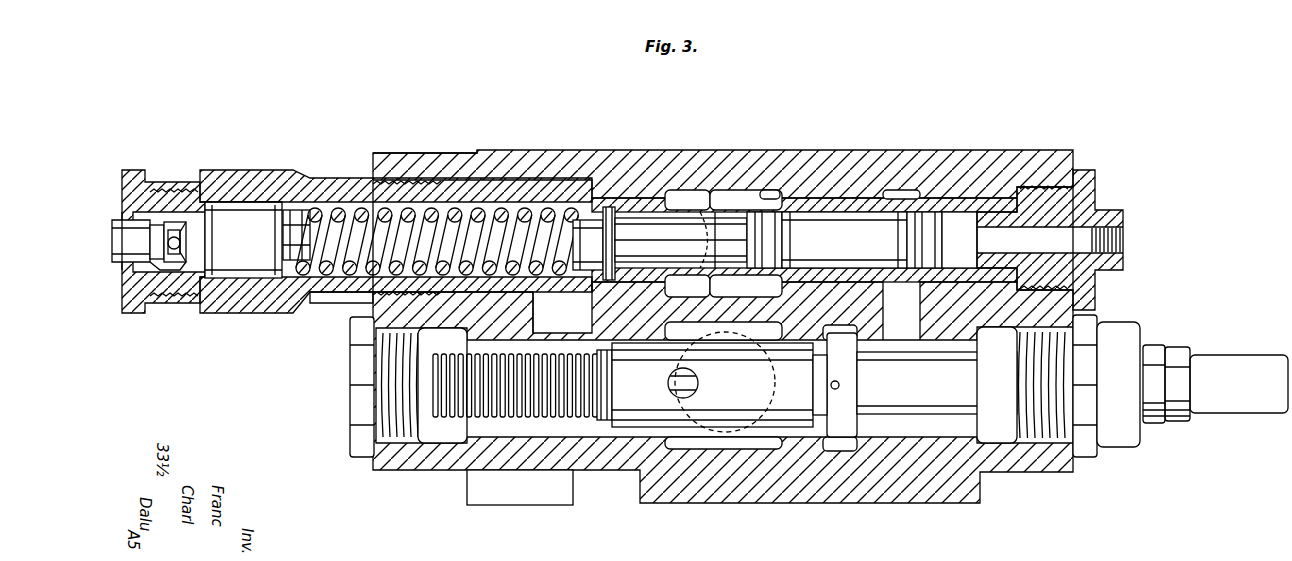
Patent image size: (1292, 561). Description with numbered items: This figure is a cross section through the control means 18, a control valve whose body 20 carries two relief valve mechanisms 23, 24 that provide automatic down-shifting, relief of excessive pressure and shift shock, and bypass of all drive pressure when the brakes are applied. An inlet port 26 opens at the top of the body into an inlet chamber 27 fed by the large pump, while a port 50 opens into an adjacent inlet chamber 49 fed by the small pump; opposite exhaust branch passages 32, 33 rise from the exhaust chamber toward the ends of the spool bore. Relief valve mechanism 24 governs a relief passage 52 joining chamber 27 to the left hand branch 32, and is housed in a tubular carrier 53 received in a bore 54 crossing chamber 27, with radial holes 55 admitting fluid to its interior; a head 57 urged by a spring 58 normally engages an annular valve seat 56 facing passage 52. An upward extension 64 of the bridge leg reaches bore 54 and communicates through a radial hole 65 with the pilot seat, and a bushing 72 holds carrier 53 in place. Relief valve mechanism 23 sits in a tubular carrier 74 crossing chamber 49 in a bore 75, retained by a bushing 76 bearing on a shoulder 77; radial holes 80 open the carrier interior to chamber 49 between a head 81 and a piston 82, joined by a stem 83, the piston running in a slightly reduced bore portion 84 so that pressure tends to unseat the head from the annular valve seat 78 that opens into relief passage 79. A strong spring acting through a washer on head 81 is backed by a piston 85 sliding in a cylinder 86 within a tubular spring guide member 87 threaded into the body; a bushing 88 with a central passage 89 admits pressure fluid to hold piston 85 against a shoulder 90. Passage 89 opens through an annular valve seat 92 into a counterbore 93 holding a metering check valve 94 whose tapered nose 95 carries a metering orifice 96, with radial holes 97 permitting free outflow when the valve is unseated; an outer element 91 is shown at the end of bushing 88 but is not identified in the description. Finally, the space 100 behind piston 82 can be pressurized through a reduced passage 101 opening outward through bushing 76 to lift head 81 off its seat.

The control means 18 is at (387, 130).
The body 20 is at (956, 152).
The relief valve mechanism 23 is at (334, 164).
The relief valve mechanism 24 is at (1132, 314).
The inlet port 26 is at (713, 436).
The inlet chamber 27 is at (765, 436).
The exhaust branch passage 32 is at (408, 387).
The exhaust branch passage 33 is at (1037, 386).
The inlet chamber 49 is at (730, 190).
The port 50 is at (699, 224).
The relief passage 52 is at (553, 427).
The tubular carrier 53 is at (814, 385).
The bore 54 is at (786, 348).
The radial holes 55 is at (696, 382).
The annular valve seat 56 is at (608, 420).
The head 57 is at (604, 380).
The spring 58 is at (533, 356).
The upward extension 64 is at (840, 388).
The radial hole 65 is at (840, 384).
The bushing 72 is at (1115, 422).
The tubular carrier 74 is at (821, 190).
The bore 75 is at (854, 192).
The bushing 76 is at (1096, 188).
The shoulder 77 is at (1028, 188).
The annular valve seat 78 is at (608, 207).
The relief passage 79 is at (578, 194).
The radial holes 80 is at (678, 192).
The head 81 is at (616, 218).
The piston 82 is at (770, 240).
The stem 83 is at (358, 290).
The bore portion 84 is at (587, 198).
The piston 85 is at (243, 240).
The cylinder 86 is at (232, 205).
The tubular spring guide member 87 is at (213, 170).
The bushing 88 is at (140, 170).
The central passage 89 is at (200, 236).
The shoulder 90 is at (335, 300).
The pin 91 is at (114, 212).
The annular valve seat 92 is at (183, 272).
The counterbore 93 is at (168, 272).
The metering check valve 94 is at (157, 220).
The tapered nose 95 is at (177, 218).
The metering orifice 96 is at (183, 243).
The radial holes 97 is at (172, 228).
The space 100 is at (959, 240).
The reduced passage 101 is at (1072, 240).